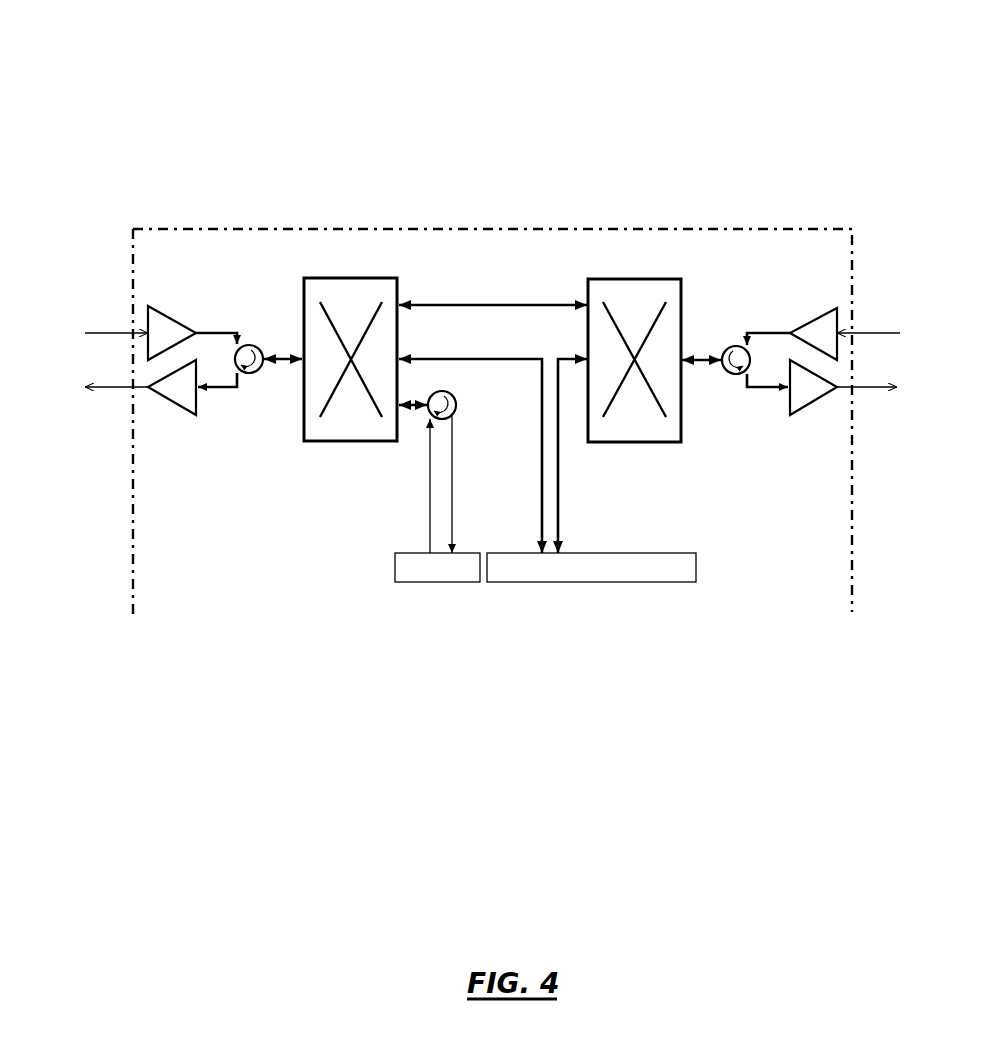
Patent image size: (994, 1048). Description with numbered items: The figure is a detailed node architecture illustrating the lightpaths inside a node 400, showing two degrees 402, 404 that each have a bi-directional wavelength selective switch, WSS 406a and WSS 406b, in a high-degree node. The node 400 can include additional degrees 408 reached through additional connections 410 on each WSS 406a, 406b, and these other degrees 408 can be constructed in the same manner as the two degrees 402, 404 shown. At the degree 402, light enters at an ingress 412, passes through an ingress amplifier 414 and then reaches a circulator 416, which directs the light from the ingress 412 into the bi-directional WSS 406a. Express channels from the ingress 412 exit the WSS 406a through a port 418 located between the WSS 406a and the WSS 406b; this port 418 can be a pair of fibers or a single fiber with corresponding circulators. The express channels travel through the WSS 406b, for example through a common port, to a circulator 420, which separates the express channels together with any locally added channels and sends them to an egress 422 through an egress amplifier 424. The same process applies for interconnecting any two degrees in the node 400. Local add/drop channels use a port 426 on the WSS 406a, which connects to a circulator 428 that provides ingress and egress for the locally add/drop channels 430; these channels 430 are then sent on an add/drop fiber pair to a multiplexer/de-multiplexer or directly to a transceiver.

The node 400 is at (560, 73).
The degree 402 is at (184, 302).
The degree 404 is at (807, 364).
The WSS 406a is at (352, 278).
The WSS 406b is at (635, 279).
The additional degrees 408 is at (573, 582).
The additional connections 410 is at (586, 497).
The ingress 412 is at (118, 323).
The ingress amplifier 414 is at (170, 313).
The circulator 416 is at (251, 343).
The port 418 is at (515, 305).
The circulator 420 is at (734, 350).
The egress 422 is at (893, 416).
The egress amplifier 424 is at (792, 414).
The port 426 is at (410, 414).
The circulator 428 is at (457, 407).
The locally add/drop channels 430 is at (442, 582).